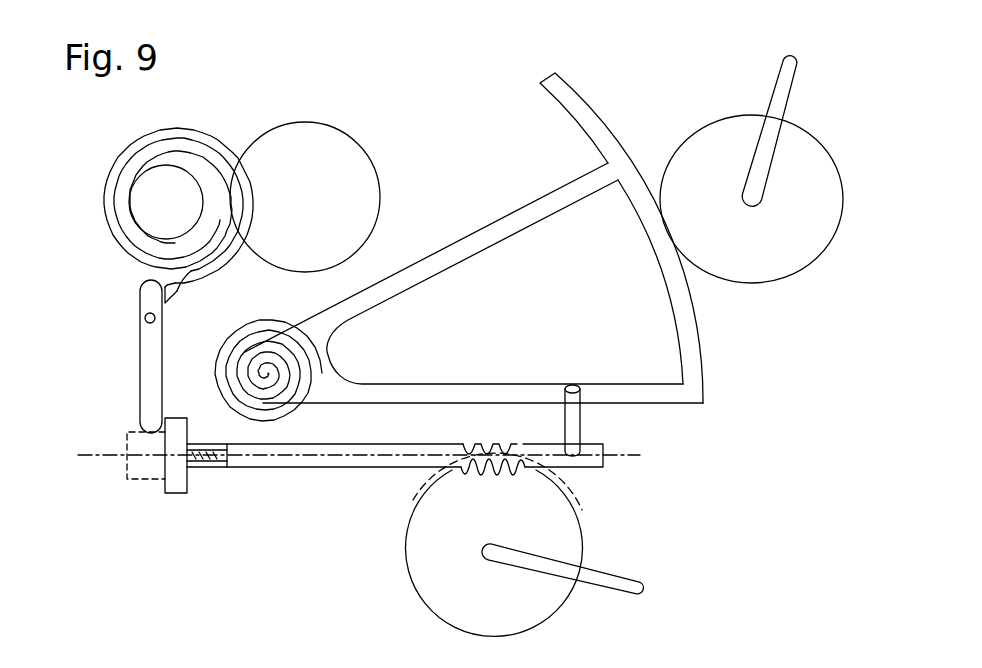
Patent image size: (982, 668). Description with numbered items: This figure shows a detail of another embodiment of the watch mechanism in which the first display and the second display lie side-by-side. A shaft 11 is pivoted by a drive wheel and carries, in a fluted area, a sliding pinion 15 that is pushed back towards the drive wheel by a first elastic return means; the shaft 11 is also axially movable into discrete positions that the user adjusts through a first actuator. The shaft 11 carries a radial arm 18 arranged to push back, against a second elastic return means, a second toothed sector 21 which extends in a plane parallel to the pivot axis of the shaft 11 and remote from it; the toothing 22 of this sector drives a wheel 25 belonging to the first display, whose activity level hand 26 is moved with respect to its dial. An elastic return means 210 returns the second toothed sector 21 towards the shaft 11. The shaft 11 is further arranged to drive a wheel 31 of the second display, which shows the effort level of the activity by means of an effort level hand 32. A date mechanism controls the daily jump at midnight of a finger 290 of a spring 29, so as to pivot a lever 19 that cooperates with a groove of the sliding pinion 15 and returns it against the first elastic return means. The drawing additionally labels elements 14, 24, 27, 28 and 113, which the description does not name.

The shaft 11 is at (346, 464).
The rack end portion 14 is at (213, 465).
The sliding pinion 15 is at (178, 492).
The radial arm 18 is at (579, 418).
The lever 19 is at (150, 403).
The second toothed sector 21 is at (510, 222).
The toothing 22 is at (714, 373).
The indicator assembly 24 is at (788, 292).
The wheel 25 is at (817, 232).
The activity level hand 26 is at (786, 78).
The wheel 27 is at (332, 166).
The spiral spring 28 is at (188, 150).
The spring 29 is at (195, 272).
The wheel 31 is at (532, 603).
The effort level hand 32 is at (617, 583).
The rack teeth 113 is at (497, 443).
The elastic return means 210 is at (257, 324).
The finger 290 is at (176, 299).